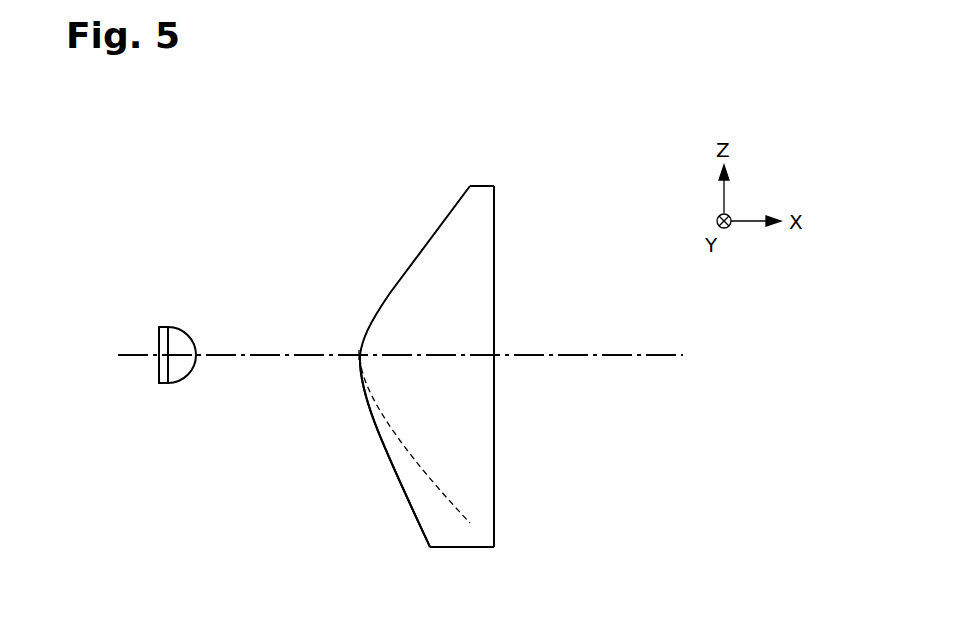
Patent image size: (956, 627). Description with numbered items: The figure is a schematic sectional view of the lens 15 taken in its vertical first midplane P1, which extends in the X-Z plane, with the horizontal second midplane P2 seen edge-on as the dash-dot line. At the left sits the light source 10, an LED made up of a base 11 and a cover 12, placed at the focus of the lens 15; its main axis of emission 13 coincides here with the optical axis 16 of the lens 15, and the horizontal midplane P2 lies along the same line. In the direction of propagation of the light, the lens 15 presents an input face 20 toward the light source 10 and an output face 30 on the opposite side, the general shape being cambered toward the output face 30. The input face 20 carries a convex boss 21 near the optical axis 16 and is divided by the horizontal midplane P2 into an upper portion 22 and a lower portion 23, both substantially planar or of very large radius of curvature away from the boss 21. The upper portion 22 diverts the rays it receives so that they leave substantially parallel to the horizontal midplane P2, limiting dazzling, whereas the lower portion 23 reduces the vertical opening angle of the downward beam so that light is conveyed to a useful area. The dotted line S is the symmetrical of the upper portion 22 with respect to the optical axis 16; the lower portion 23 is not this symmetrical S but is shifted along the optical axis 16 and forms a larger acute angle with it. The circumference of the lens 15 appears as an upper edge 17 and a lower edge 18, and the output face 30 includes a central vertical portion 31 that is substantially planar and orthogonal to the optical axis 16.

The light source 10 is at (160, 363).
The base 11 is at (158, 346).
The cover 12 is at (178, 345).
The main axis of emission 13 is at (666, 358).
The lens 15 is at (313, 463).
The optical axis 16 is at (407, 402).
The upper edge 17 is at (483, 185).
The lower edge 18 is at (463, 548).
The input face 20 is at (443, 345).
The boss 21 is at (358, 345).
The upper portion 22 is at (436, 221).
The lower portion 23 is at (396, 488).
The output face 30 is at (518, 225).
The central vertical portion 31 is at (495, 500).
The symmetrical S is at (460, 512).
The vertical first midplane P1 is at (681, 125).
The horizontal second midplane P2 is at (419, 402).